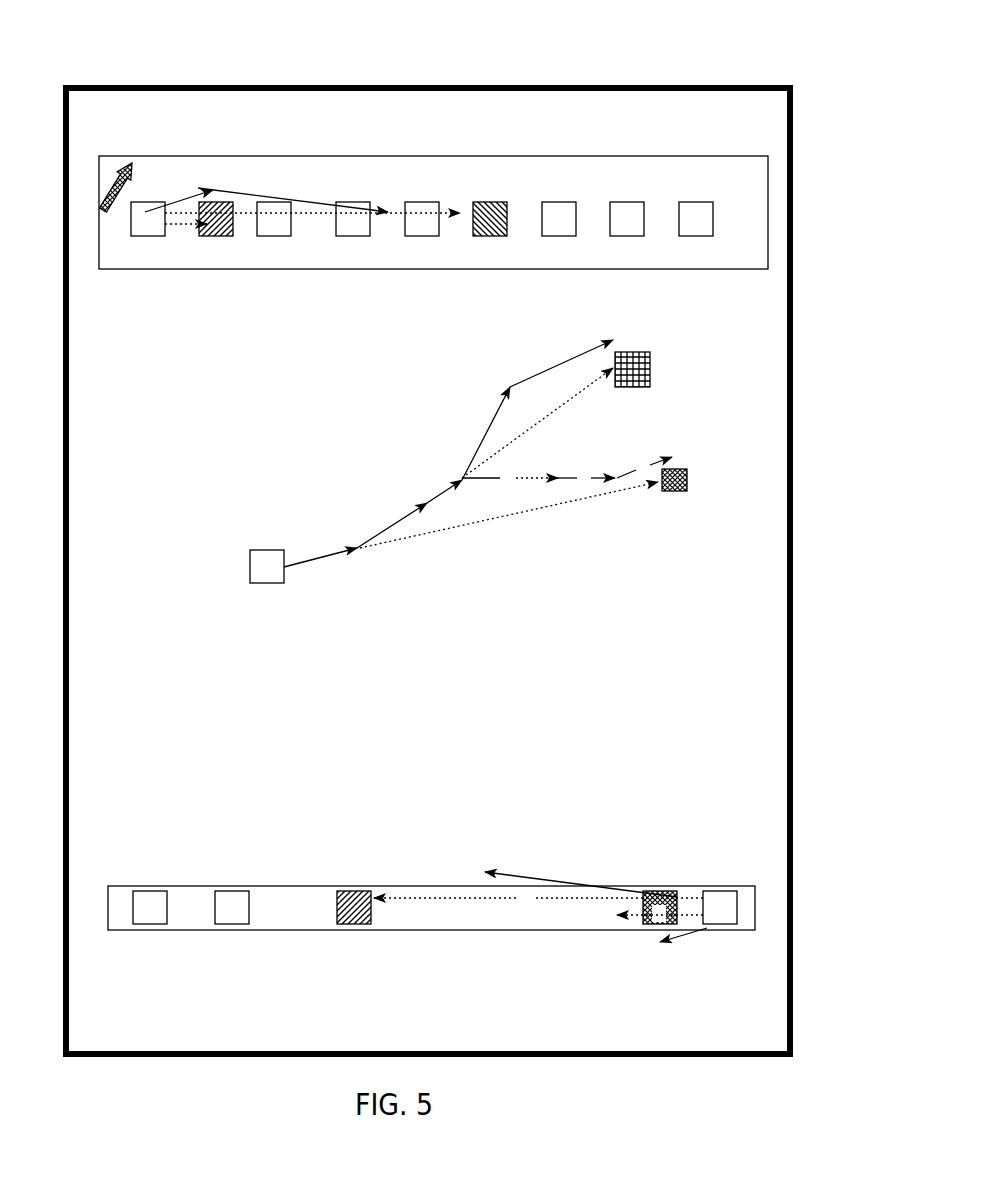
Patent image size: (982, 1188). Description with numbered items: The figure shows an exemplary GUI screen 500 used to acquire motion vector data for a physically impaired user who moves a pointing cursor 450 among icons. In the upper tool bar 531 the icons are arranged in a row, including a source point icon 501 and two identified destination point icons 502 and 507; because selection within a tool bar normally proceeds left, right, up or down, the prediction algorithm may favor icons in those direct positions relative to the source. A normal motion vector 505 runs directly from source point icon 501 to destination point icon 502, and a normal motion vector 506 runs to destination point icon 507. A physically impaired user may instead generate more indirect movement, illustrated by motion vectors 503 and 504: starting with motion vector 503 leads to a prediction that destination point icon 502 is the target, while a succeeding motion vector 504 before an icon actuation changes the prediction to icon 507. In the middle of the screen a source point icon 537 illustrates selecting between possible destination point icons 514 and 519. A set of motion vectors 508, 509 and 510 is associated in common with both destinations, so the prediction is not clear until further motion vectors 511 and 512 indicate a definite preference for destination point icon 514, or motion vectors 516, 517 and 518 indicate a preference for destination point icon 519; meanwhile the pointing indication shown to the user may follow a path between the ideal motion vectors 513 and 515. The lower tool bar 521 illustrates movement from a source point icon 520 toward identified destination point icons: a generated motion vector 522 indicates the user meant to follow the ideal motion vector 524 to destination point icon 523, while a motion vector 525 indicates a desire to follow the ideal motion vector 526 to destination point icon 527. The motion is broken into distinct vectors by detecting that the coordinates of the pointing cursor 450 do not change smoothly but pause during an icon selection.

The GUI screen 500 is at (740, 80).
The pointing cursor 450 is at (112, 178).
The source point icon 501 is at (138, 237).
The destination point icon 502 is at (233, 237).
The motion vector 503 is at (172, 185).
The motion vector 504 is at (242, 182).
The motion vector 505 is at (170, 237).
The motion vector 506 is at (318, 213).
The destination point icon 507 is at (490, 202).
The tool bar 531 is at (696, 158).
The source point icon 537 is at (250, 565).
The motion vector 508 is at (313, 557).
The motion vector 509 is at (375, 530).
The motion vector 510 is at (433, 490).
The motion vector 511 is at (485, 407).
The motion vector 512 is at (543, 357).
The ideal motion vector 513 is at (558, 413).
The destination point icon 514 is at (653, 357).
The ideal motion vector 515 is at (423, 537).
The motion vector 516 is at (495, 480).
The motion vector 517 is at (575, 480).
The motion vector 518 is at (660, 453).
The destination point icon 519 is at (687, 490).
The source point icon 520 is at (710, 890).
The tool bar 521 is at (270, 887).
The motion vector 522 is at (707, 935).
The destination point icon 523 is at (663, 892).
The ideal motion vector 524 is at (635, 925).
The motion vector 525 is at (592, 885).
The ideal motion vector 526 is at (437, 900).
The destination point icon 527 is at (347, 925).